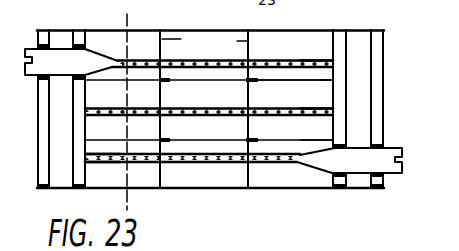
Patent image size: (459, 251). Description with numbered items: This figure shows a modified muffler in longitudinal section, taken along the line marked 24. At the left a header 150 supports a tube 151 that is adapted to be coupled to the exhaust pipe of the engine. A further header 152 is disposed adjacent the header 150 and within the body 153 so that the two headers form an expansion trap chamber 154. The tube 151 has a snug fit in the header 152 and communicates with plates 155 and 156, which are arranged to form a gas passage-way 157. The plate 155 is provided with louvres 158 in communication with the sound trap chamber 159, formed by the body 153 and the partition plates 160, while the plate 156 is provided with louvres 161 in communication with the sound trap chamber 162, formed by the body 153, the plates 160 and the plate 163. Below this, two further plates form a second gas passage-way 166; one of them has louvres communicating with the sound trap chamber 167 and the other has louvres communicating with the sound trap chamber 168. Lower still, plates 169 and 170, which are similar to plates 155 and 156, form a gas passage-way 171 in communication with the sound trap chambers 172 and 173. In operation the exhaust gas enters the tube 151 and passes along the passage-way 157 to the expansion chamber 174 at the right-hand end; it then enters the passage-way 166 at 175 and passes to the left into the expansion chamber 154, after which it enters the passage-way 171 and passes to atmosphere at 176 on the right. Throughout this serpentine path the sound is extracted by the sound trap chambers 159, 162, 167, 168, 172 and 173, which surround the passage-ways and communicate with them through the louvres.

The section line 24- 24 is at (134, 106).
The header 150 is at (48, 142).
The tube 151 is at (29, 77).
The further header 152 is at (85, 175).
The body 153 is at (66, 29).
The expansion trap chamber 154 is at (53, 113).
The plate 155 is at (103, 54).
The plate 156 is at (103, 68).
The gas passage-way 157 is at (335, 62).
The louvres 158 is at (284, 56).
The sound trap chamber 159 is at (208, 43).
The partition plates 160 is at (204, 41).
The louvres 161 is at (283, 68).
The sound trap chamber 162 is at (190, 77).
The plate 163 is at (271, 84).
The gas passage-way 166 is at (85, 110).
The sound trap chamber 167 is at (327, 93).
The sound trap chamber 168 is at (318, 130).
The plate 169 is at (267, 144).
The plate 170 is at (258, 163).
The gas passage-way 171 is at (85, 160).
The sound trap chamber 172 is at (185, 149).
The sound trap chamber 173 is at (190, 178).
The expansion chamber 174 is at (361, 43).
The entry to passage-way 175 is at (335, 110).
The outlet to atmosphere 176 is at (397, 153).